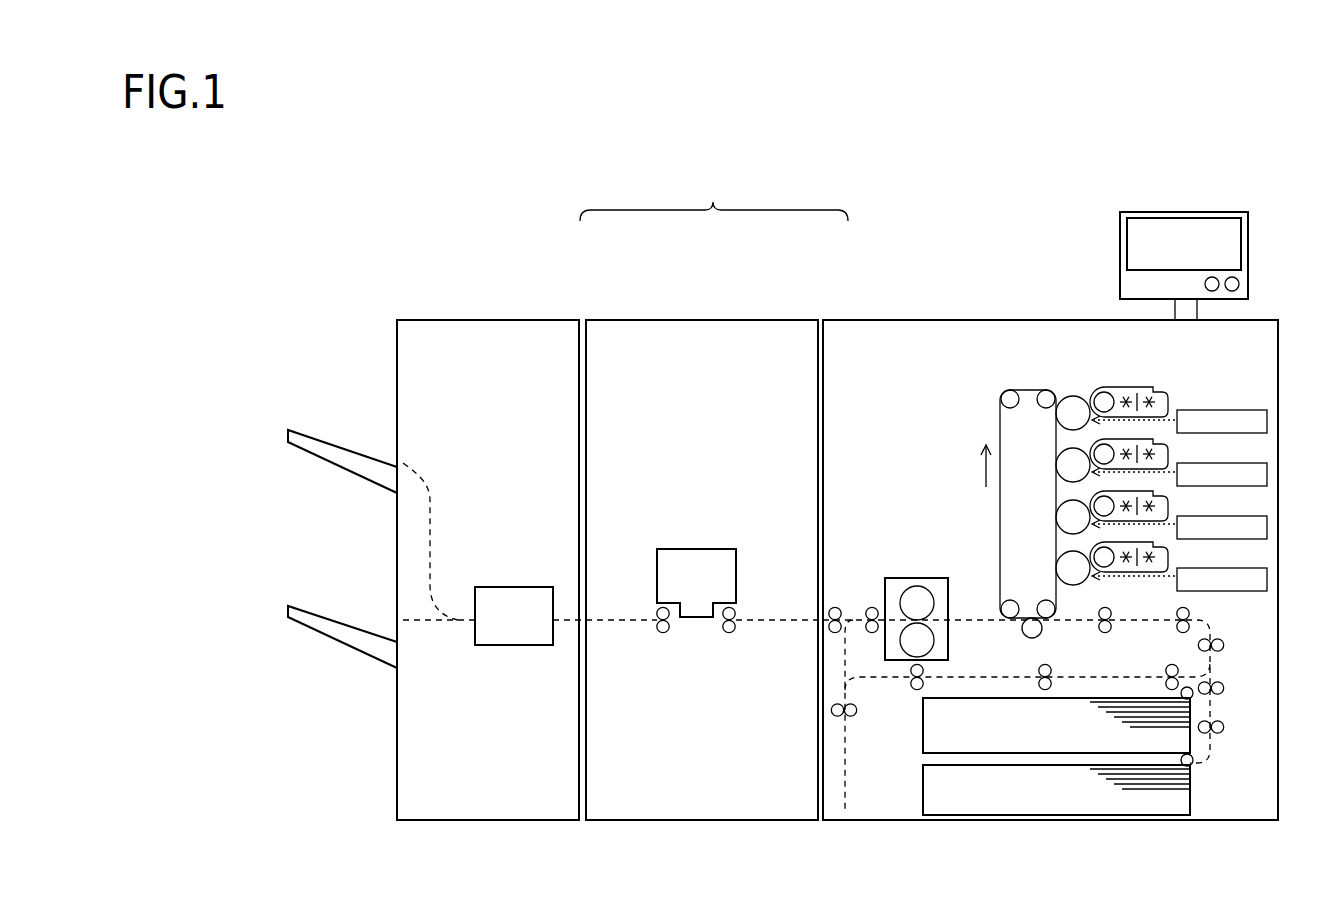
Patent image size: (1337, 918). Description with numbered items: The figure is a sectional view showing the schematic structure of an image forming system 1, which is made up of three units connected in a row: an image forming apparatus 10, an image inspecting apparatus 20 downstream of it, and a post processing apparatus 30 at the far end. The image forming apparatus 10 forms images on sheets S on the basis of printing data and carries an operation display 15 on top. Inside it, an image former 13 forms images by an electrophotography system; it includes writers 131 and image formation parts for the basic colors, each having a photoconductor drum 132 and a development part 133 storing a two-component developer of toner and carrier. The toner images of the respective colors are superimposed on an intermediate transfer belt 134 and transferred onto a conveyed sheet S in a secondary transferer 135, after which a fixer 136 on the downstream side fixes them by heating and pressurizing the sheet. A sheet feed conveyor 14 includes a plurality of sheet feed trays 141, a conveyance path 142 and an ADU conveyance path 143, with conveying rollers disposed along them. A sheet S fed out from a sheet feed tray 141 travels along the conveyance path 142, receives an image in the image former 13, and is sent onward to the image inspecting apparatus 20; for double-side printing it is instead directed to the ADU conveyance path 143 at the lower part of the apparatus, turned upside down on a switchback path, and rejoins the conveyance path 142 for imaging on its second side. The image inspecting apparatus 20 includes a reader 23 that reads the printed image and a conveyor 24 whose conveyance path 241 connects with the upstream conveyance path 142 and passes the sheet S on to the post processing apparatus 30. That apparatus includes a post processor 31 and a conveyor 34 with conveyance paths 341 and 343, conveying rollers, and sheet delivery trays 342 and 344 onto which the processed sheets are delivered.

The image forming system 1 is at (713, 202).
The image forming apparatus 10 is at (860, 271).
The image former 13 is at (910, 412).
The sheet feed conveyor 14 is at (1047, 701).
The operation display 15 is at (1250, 252).
The writer 131 is at (1192, 410).
The photoconductor drum 132 is at (1067, 397).
The development part 133 is at (1130, 387).
The intermediate transfer belt 134 is at (1020, 389).
The secondary transferer 135 is at (1022, 631).
The fixer 136 is at (940, 578).
The sheet feed tray 141 is at (1024, 725).
The conveyance path 142 is at (1122, 619).
The ADU conveyance path 143 is at (878, 681).
The image inspecting apparatus 20 is at (720, 280).
The reader 23 is at (710, 549).
The conveyor 24 is at (776, 458).
The conveyance path 241 is at (782, 618).
The post processing apparatus 30 is at (576, 278).
The post processor 31 is at (505, 587).
The conveyor 34 is at (543, 456).
The conveyance path 341 is at (572, 628).
The sheet delivery tray 342 is at (328, 618).
The conveyance path 343 is at (440, 478).
The sheet delivery tray 344 is at (328, 445).
The sheet S is at (1115, 700).